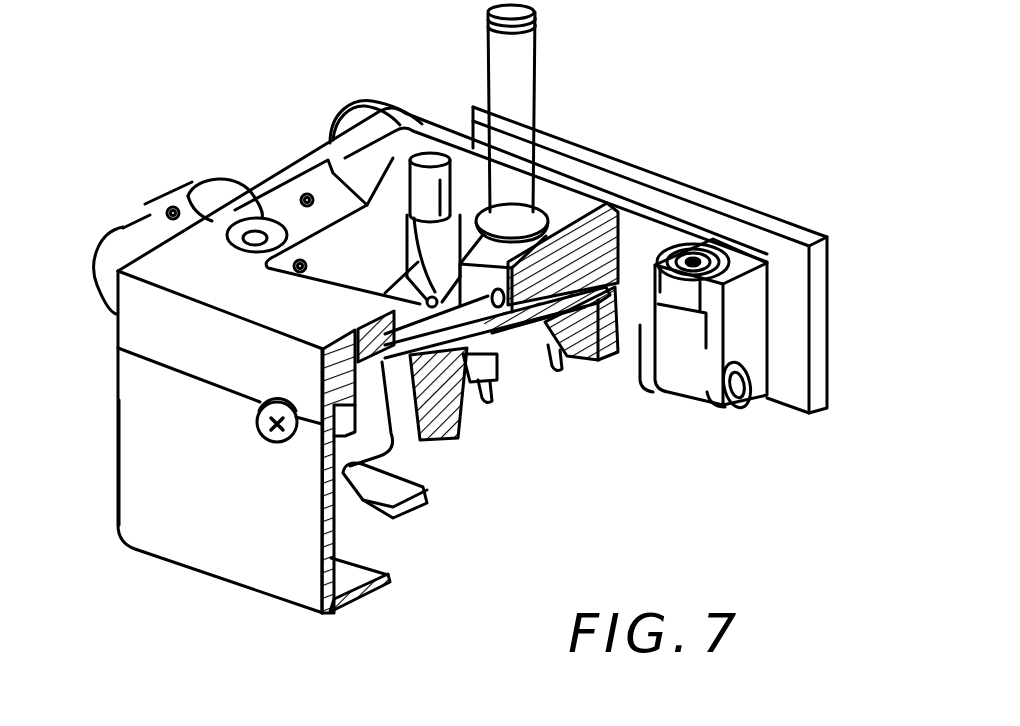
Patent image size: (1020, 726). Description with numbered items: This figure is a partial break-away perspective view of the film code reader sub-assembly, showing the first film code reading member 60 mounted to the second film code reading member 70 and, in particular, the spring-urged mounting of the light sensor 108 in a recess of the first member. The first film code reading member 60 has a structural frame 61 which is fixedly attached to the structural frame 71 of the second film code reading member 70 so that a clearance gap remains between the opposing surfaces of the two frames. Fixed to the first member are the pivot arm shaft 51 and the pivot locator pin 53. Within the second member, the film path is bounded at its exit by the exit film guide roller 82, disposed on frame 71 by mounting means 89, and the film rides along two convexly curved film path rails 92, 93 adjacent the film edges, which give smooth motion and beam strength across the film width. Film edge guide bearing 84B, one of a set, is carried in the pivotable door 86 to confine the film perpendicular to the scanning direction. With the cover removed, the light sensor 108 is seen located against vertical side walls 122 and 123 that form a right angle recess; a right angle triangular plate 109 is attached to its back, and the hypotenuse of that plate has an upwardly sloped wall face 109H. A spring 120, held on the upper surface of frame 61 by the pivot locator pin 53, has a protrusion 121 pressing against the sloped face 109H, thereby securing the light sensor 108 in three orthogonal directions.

The pivot arm shaft 51 is at (537, 53).
The pivot locator pin 53 is at (433, 153).
The first film code reading member 60 is at (110, 328).
The structural frame 61 is at (184, 353).
The second film code reading member 70 is at (377, 594).
The structural frame 71 is at (150, 556).
The exit film guide roller 82 is at (200, 190).
The film edge guide bearing 84B is at (673, 290).
The pivotable door 86 is at (700, 188).
The mounting means 89 is at (128, 222).
The convexly curved film path rail 92 is at (605, 364).
The convexly curved film path rail 93 is at (478, 396).
The light sensor 108 is at (416, 432).
The right angle triangular plate 109 is at (382, 266).
The upwardly sloped wall face 109H is at (364, 327).
The spring 120 is at (407, 223).
The protrusion 121 is at (408, 242).
The vertical side wall 122 is at (320, 294).
The vertical side wall 123 is at (490, 214).